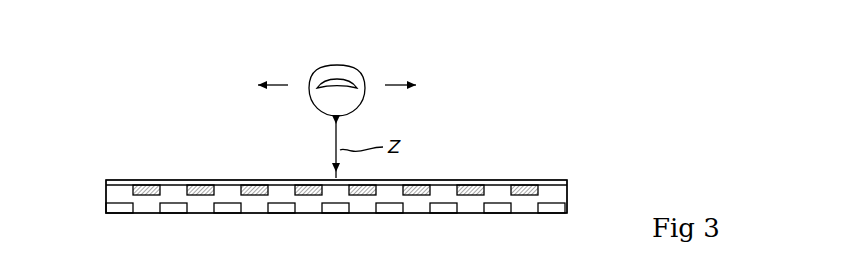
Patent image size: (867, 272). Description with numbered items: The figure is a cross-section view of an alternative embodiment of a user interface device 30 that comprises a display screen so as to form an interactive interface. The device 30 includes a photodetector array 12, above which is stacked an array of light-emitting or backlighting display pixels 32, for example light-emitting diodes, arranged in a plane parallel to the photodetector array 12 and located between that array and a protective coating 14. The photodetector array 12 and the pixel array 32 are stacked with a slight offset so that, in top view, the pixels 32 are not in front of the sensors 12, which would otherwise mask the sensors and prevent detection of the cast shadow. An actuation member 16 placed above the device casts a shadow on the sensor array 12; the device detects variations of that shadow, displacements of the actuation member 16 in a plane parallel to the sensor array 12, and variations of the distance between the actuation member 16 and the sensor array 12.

The user interface device 30 is at (100, 168).
The protective coating 14 is at (552, 180).
The light-emitting display pixels 32 is at (200, 190).
The photodetector array 12 is at (175, 213).
The actuation member 16 is at (362, 82).